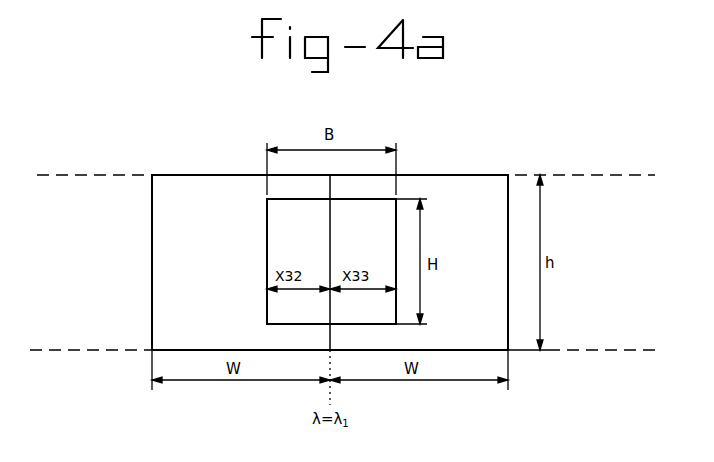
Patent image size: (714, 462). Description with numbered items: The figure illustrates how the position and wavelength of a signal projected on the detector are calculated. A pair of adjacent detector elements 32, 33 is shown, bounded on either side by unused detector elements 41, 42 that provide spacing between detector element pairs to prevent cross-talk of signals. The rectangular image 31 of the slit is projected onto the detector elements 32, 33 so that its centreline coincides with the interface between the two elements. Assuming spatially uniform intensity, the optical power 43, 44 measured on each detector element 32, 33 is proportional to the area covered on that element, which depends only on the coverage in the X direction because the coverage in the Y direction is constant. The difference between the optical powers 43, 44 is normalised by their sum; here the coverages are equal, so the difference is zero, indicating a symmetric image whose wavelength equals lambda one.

The image 31 is at (387, 222).
The detector element 32 is at (192, 184).
The detector element 33 is at (460, 184).
The unused detector element 41 is at (74, 202).
The unused detector element 42 is at (618, 205).
The optical power 43 is at (275, 308).
The optical power 44 is at (385, 306).